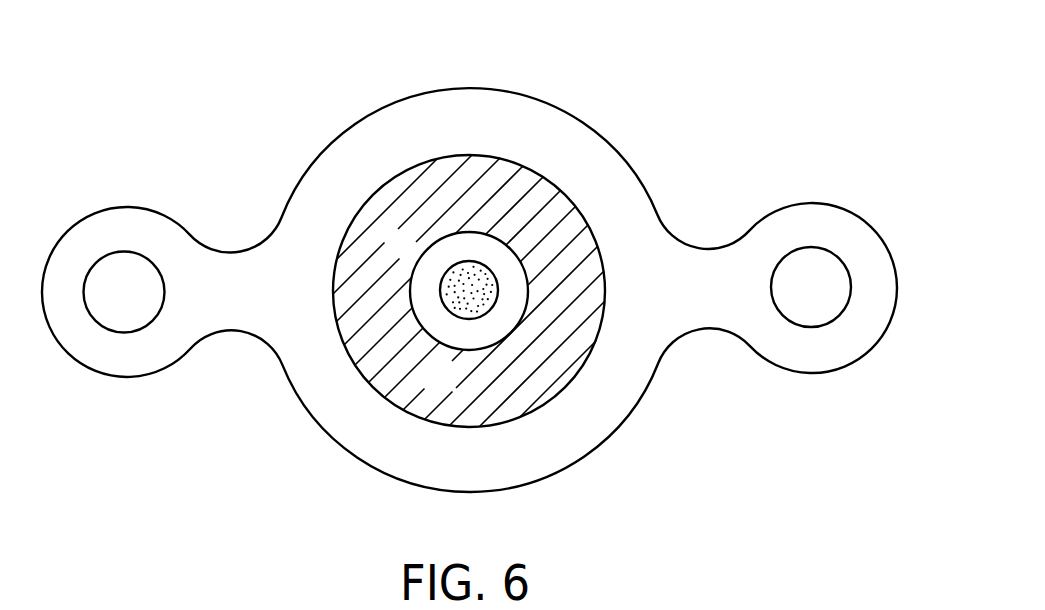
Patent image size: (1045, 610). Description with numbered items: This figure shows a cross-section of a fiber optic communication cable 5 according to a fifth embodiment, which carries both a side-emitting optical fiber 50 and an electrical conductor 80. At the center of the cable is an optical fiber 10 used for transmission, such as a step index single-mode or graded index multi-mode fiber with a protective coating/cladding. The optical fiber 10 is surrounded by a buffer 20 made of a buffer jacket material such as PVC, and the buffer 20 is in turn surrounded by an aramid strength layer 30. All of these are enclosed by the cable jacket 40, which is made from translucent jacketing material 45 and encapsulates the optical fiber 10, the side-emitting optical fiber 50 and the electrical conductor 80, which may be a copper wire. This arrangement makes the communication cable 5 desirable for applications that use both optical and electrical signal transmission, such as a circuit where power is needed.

The fiber optic communication cable 5 is at (469, 259).
The optical fiber 10 is at (440, 291).
The buffer 20 is at (480, 351).
The aramid strength layer 30 is at (432, 411).
The cable jacket 40 is at (469, 302).
The translucent jacketing material 45 is at (332, 427).
The side-emitting optical fiber 50 is at (122, 317).
The electrical conductor 80 is at (807, 313).